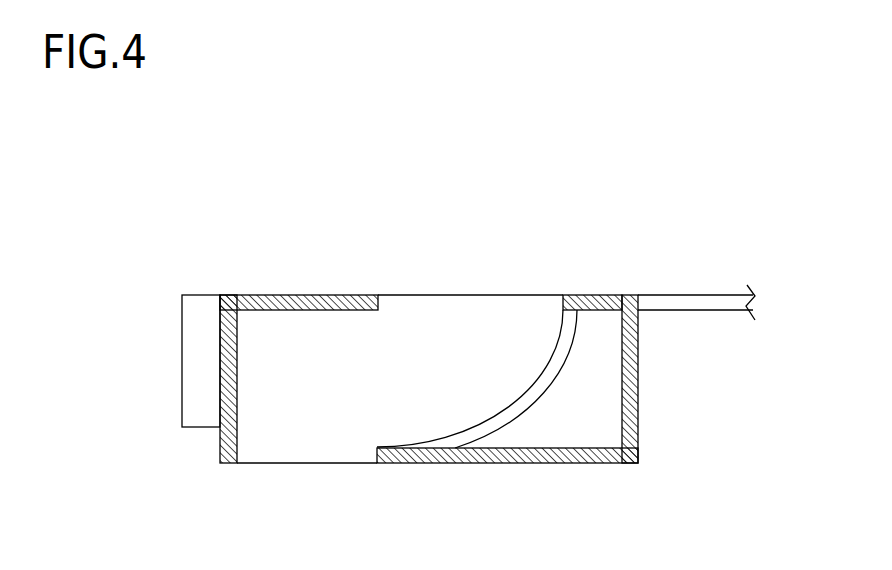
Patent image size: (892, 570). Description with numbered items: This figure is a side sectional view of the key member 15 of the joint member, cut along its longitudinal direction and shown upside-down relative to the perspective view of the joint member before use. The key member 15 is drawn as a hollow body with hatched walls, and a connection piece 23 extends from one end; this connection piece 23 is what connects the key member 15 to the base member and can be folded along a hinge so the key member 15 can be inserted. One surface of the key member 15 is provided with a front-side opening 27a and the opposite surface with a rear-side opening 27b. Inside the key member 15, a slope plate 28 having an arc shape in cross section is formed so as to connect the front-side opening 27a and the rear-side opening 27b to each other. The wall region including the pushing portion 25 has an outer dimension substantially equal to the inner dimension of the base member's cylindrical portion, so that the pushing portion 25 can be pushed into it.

The key member 15 is at (604, 238).
The front-side opening 27a is at (453, 310).
The rear-side opening 27b is at (293, 450).
The pushing portion 25 is at (495, 453).
The slope plate 28 is at (493, 418).
The connection piece 23 is at (692, 303).